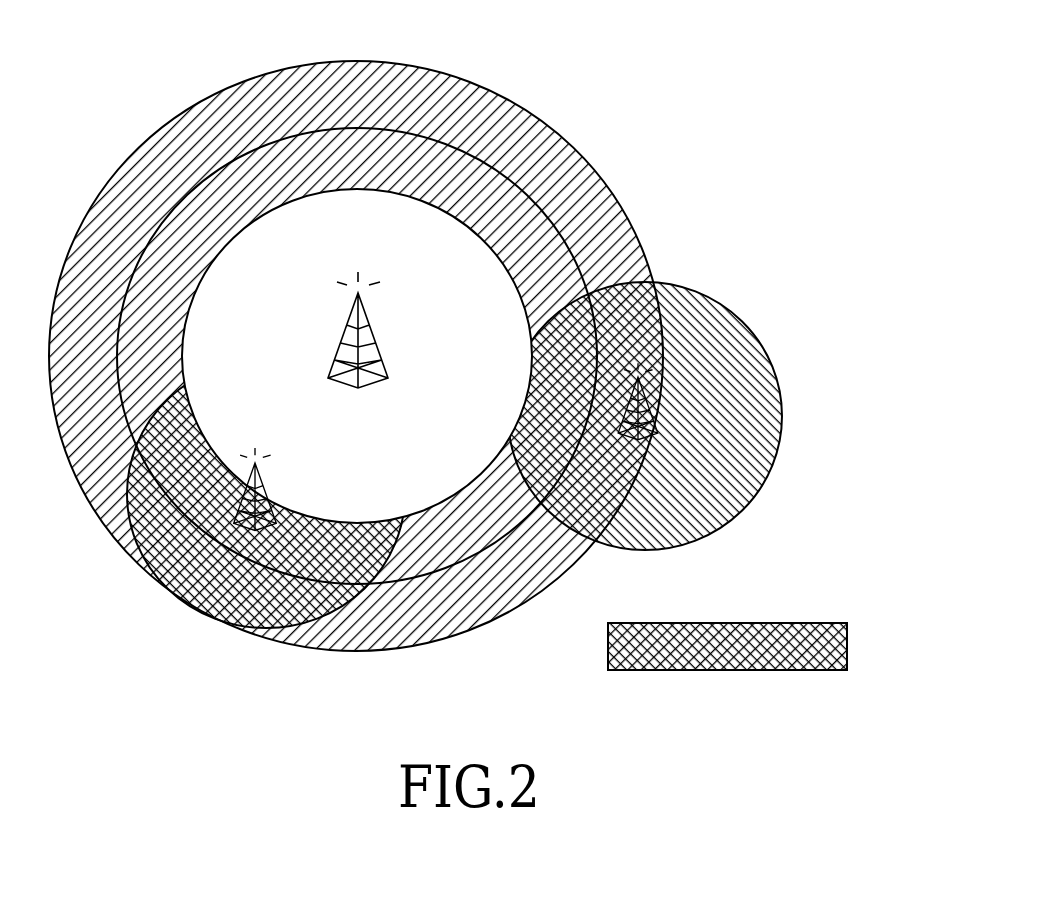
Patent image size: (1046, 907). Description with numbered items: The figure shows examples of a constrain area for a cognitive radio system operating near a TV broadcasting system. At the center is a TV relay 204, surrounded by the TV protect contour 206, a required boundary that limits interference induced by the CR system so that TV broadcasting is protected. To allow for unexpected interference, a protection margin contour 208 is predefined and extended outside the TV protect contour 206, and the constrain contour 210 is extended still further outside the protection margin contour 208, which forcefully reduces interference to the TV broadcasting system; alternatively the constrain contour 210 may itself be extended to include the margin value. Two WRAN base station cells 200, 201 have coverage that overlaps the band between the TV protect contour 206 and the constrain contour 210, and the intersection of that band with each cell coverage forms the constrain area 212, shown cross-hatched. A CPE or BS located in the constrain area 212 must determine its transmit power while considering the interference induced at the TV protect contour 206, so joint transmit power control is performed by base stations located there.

The cell 200 is at (645, 416).
The cell 201 is at (266, 494).
The TV relay 204 is at (358, 355).
The TV protect contour 206 is at (425, 198).
The protection margin contour 208 is at (520, 182).
The constrain contour 210 is at (642, 233).
The constrain area 212 is at (448, 365).